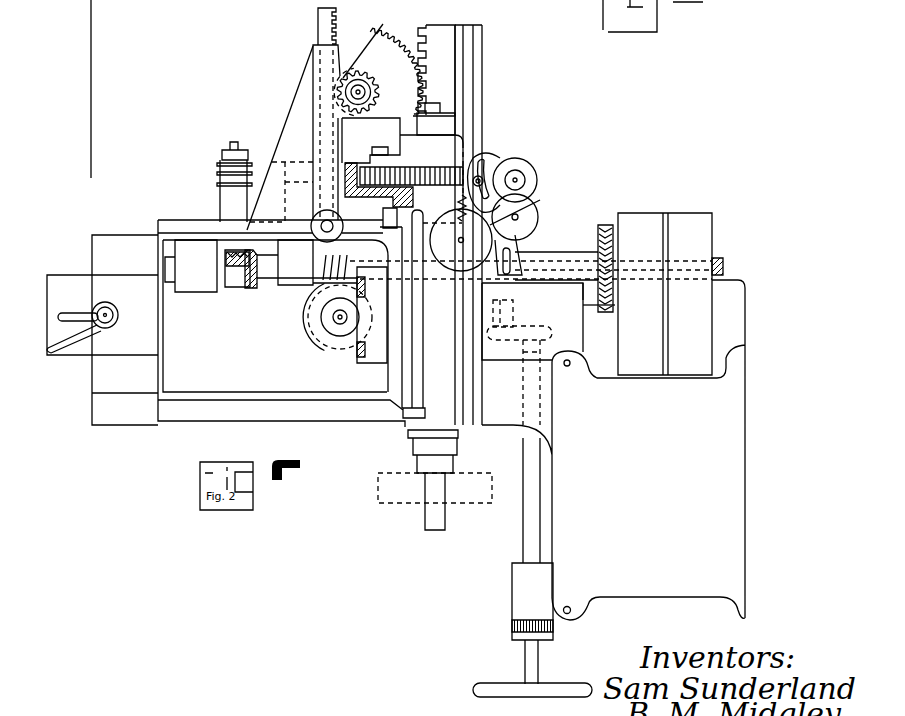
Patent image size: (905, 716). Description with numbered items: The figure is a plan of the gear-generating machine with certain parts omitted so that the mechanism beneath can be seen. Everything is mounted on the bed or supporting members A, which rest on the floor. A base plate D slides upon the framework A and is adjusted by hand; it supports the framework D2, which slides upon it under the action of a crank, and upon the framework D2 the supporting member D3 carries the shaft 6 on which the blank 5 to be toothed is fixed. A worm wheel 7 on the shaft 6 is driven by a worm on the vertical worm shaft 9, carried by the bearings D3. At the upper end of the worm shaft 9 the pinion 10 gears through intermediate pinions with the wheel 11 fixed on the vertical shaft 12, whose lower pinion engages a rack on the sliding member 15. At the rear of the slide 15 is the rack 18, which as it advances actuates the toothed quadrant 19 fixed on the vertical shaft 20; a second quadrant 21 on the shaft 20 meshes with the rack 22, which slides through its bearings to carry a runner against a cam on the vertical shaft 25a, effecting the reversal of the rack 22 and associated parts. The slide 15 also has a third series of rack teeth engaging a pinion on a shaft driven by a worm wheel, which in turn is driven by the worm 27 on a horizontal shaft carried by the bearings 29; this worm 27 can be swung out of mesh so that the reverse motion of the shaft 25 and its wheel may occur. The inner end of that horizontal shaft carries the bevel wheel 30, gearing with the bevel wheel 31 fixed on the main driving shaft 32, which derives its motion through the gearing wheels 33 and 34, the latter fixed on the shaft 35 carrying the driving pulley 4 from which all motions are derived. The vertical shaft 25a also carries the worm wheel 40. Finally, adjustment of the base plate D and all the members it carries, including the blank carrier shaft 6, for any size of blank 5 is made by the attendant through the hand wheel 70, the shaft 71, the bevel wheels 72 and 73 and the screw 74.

The bed or supporting members A is at (120, 50).
The base plate D is at (127, 340).
The framework D2 is at (300, 92).
The supporting member D3 is at (465, 142).
The driving pulley 4 is at (642, 225).
The blank 5 is at (388, 495).
The shaft 6 is at (437, 517).
The worm wheel 7 is at (403, 172).
The vertical worm shaft 9 is at (517, 175).
The pinion 10 is at (517, 179).
The wheel 11 is at (540, 200).
The vertical shaft 12 is at (460, 243).
The sliding member 15 is at (445, 37).
The rack 18 is at (418, 43).
The toothed quadrant 19 is at (377, 42).
The vertical shaft 20 is at (360, 90).
The quadrant 21 is at (380, 90).
The rack 22 is at (318, 23).
The shaft 25 is at (297, 167).
The vertical shaft 25a is at (340, 320).
The worm 27 is at (219, 176).
The bearings 29 is at (230, 208).
The bevel wheel 30 is at (225, 262).
The bevel wheel 31 is at (258, 284).
The main driving shaft 32 is at (238, 270).
The gearing wheel 33 is at (604, 225).
The gearing wheel 34 is at (612, 298).
The shaft 35 is at (590, 297).
The worm wheel 40 is at (330, 273).
The hand wheel 70 is at (563, 690).
The shaft 71 is at (530, 478).
The bevel wheel 72 is at (537, 333).
The bevel wheel 73 is at (510, 300).
The screw 74 is at (502, 330).